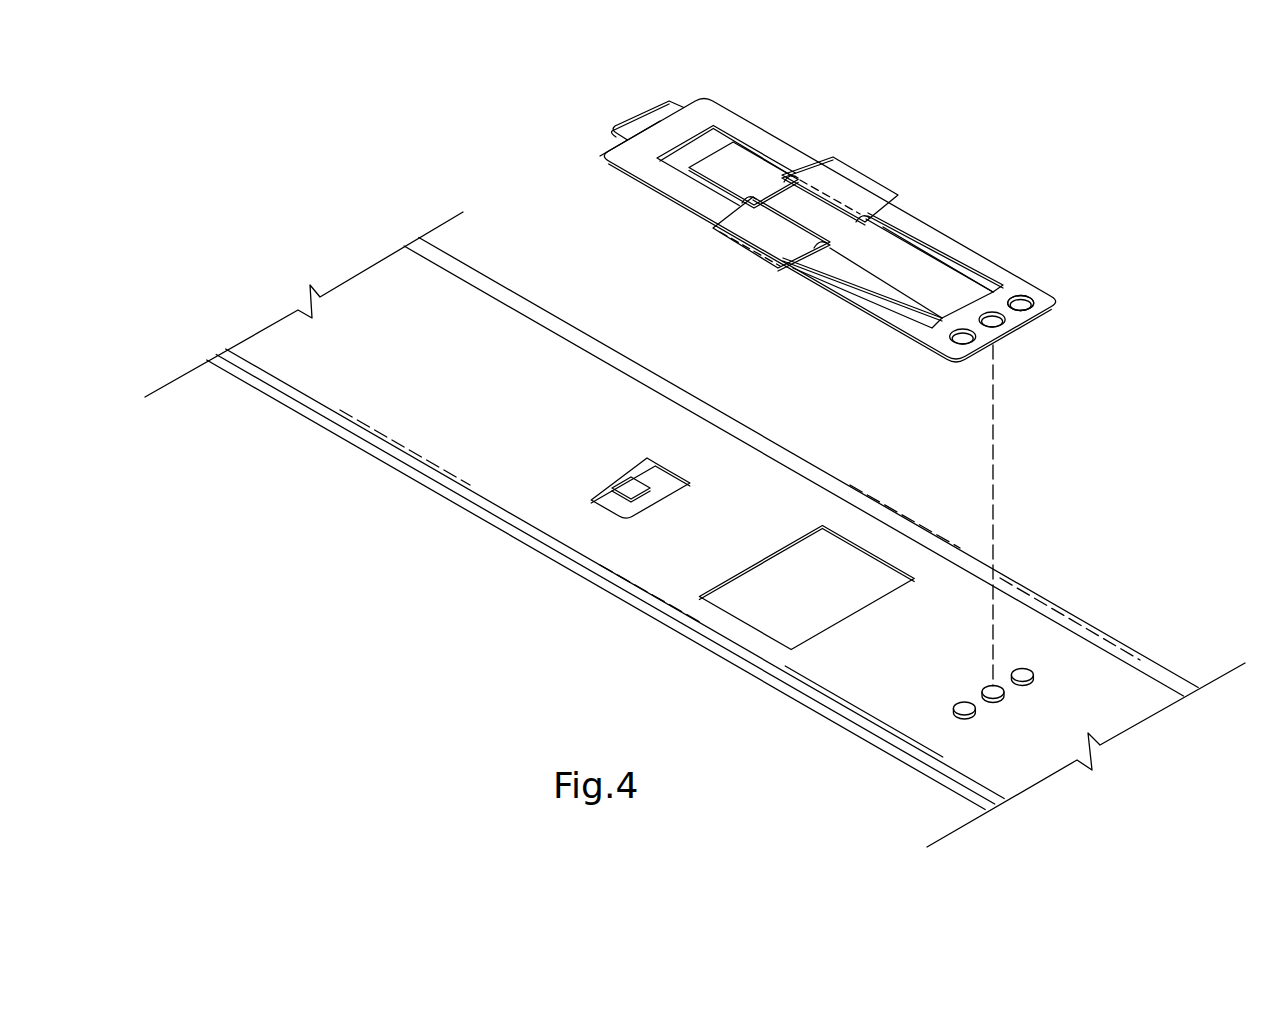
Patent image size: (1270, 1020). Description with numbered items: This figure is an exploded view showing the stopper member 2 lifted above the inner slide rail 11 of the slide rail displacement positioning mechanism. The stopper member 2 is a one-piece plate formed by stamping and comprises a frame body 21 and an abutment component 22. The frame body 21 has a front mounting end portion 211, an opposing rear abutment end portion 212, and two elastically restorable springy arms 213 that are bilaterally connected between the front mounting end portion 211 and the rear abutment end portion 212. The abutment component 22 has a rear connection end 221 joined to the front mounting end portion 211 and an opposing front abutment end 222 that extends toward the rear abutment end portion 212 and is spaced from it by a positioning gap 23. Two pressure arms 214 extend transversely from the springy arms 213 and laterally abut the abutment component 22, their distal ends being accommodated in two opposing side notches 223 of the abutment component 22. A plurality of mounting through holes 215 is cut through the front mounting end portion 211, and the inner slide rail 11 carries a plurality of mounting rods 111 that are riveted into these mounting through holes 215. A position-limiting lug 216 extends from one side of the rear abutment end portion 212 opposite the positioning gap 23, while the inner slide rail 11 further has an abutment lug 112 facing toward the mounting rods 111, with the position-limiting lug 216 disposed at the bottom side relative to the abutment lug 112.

The inner slide rail 11 is at (445, 460).
The mounting rods 111 is at (1034, 676).
The abutment lug 112 is at (635, 483).
The stopper member 2 is at (824, 221).
The frame body 21 is at (991, 249).
The front mounting end portion 211 is at (1022, 322).
The rear abutment end portion 212 is at (650, 138).
The springy arms 213 is at (1000, 268).
The pressure arms 214 is at (845, 185).
The mounting through holes 215 is at (1034, 303).
The position-limiting lug 216 is at (645, 112).
The abutment component 22 is at (864, 287).
The rear connection end 221 is at (945, 300).
The front abutment end 222 is at (736, 160).
The side notches 223 is at (750, 200).
The positioning gap 23 is at (700, 142).